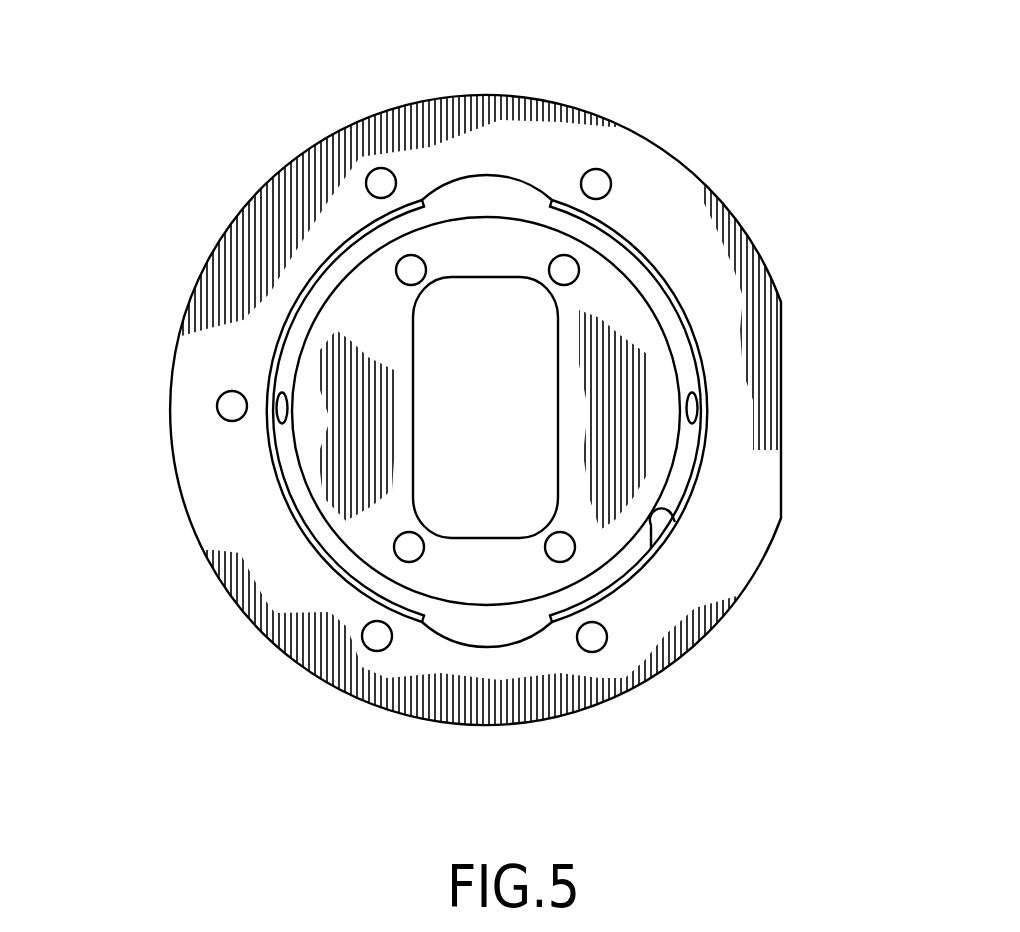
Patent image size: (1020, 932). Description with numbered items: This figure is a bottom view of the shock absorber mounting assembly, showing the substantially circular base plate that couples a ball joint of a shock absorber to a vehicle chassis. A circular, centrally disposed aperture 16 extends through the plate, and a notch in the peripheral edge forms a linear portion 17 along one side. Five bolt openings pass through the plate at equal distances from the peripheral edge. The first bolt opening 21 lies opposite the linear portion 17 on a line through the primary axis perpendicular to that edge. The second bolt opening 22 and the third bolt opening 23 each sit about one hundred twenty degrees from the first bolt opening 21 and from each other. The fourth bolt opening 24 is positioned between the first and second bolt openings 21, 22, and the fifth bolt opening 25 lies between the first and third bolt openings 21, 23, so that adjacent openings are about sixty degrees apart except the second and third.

The centrally disposed aperture 16 is at (653, 547).
The linear portion 17 is at (782, 415).
The first bolt opening 21 is at (217, 408).
The second bolt opening 22 is at (603, 169).
The third bolt opening 23 is at (604, 645).
The fourth bolt opening 24 is at (372, 171).
The fifth bolt opening 25 is at (376, 651).